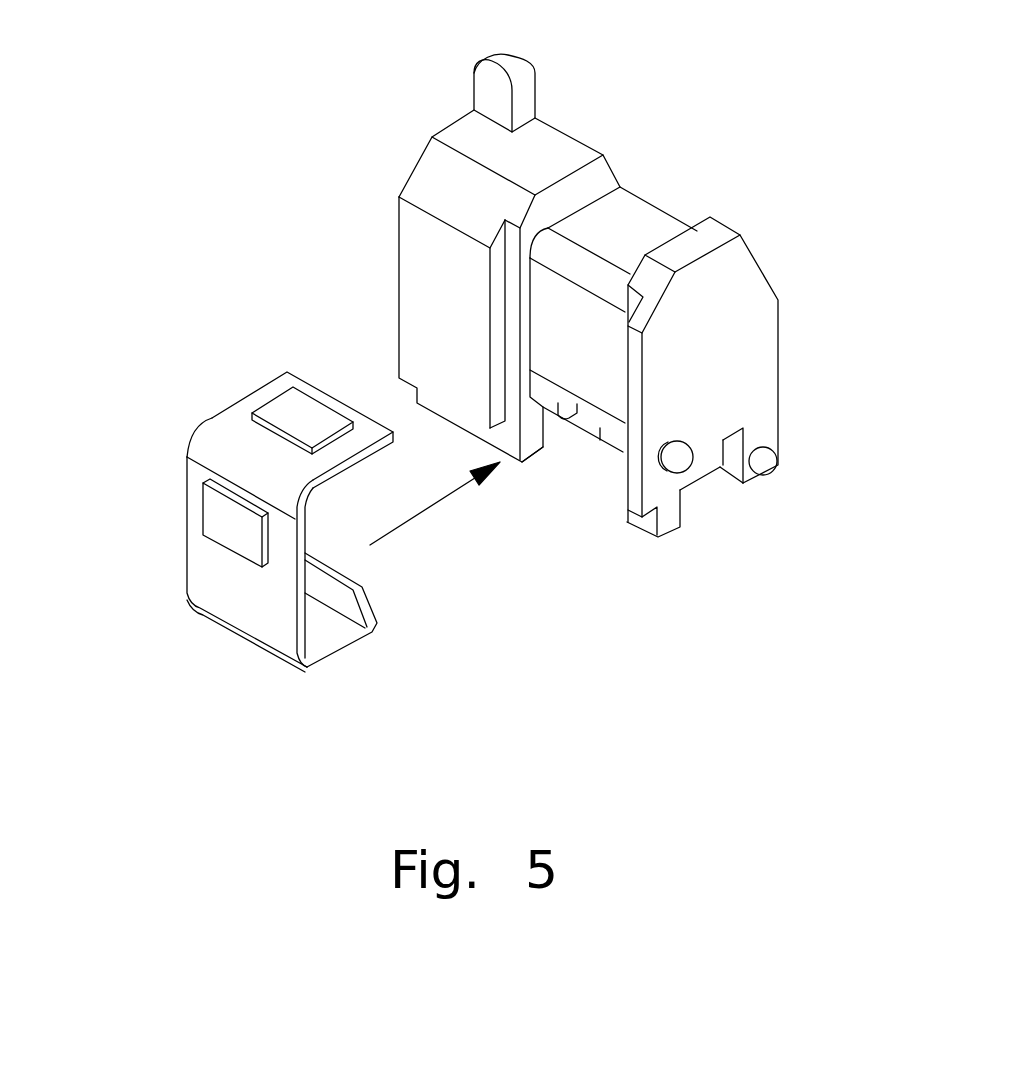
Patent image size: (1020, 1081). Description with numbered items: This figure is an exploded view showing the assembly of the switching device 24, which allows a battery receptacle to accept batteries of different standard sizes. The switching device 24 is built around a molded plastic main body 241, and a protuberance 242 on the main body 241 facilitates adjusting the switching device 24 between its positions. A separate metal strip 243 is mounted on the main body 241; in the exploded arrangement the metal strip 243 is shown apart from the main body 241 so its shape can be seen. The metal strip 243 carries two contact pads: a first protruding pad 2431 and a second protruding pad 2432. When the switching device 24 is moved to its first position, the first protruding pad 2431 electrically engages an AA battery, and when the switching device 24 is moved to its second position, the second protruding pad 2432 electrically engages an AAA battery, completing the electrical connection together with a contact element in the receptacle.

The switching device 24 is at (778, 250).
The main body 241 is at (437, 277).
The protuberance 242 is at (522, 98).
The metal strip 243 is at (245, 587).
The first protruding pad 2431 is at (223, 519).
The second protruding pad 2432 is at (303, 413).